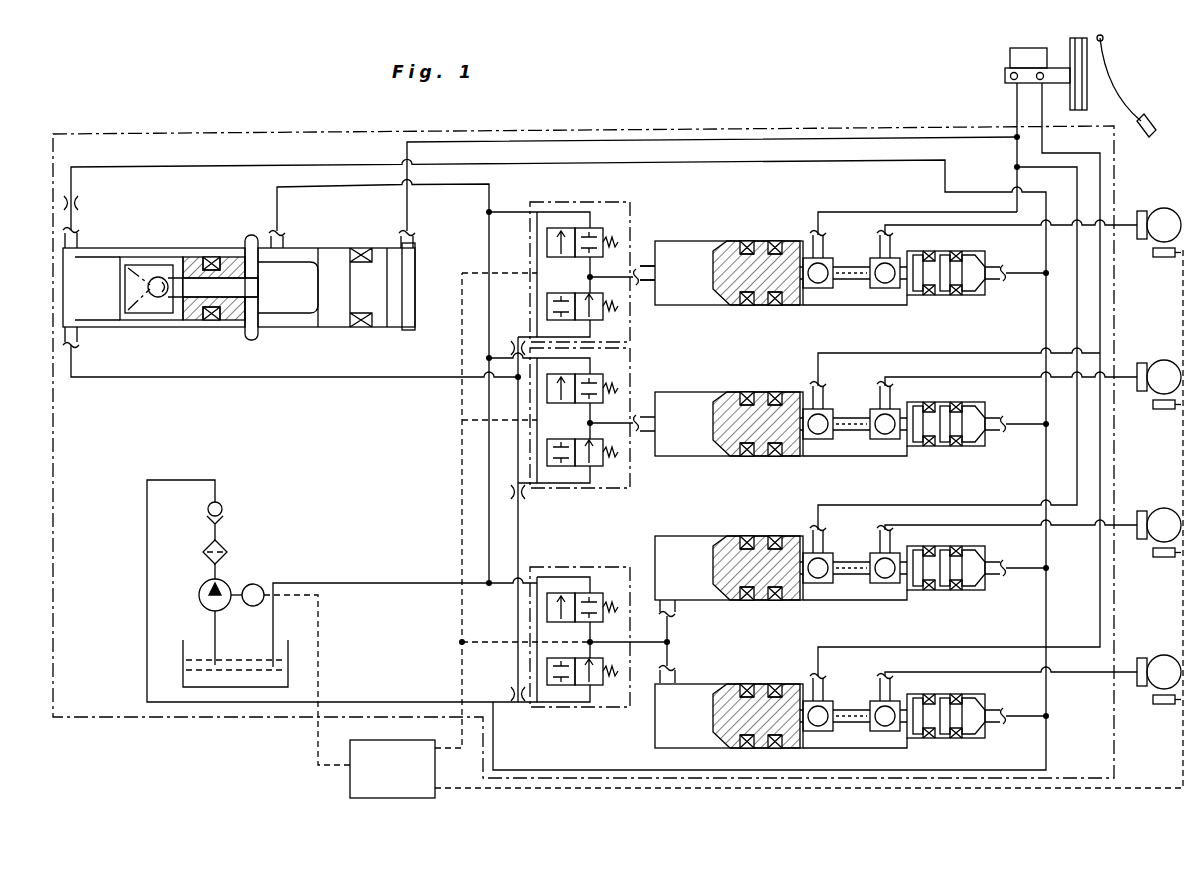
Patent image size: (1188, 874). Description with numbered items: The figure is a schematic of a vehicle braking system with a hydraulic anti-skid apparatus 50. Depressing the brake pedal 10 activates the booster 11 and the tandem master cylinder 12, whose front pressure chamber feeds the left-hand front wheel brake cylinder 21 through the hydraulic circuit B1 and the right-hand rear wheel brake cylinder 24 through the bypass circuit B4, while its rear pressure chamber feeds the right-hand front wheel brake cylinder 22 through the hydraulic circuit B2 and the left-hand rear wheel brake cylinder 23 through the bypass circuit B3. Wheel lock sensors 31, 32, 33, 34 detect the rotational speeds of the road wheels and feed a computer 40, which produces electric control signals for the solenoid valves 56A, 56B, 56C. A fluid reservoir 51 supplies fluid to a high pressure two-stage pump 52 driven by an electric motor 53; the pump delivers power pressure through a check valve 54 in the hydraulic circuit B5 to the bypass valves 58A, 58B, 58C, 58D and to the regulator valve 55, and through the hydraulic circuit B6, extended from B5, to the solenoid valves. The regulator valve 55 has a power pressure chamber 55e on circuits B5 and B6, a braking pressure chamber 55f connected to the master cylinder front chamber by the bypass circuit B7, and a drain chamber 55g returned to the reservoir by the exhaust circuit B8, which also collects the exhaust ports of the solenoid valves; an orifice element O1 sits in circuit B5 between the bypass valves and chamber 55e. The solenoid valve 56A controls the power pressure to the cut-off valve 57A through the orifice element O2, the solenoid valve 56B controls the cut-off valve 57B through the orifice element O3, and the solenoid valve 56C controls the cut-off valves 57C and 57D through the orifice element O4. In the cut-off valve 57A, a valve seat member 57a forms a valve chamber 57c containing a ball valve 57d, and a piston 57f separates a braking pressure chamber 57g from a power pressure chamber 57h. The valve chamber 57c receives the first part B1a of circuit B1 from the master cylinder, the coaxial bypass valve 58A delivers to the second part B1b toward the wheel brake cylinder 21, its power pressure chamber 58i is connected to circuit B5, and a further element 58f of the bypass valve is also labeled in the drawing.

The brake pedal 10 is at (1148, 116).
The booster 11 is at (1069, 43).
The tandem master cylinder 12 is at (1004, 78).
The left-hand front wheel brake cylinder 21 is at (1141, 213).
The right-hand front wheel brake cylinder 22 is at (1141, 364).
The left-hand rear wheel brake cylinder 23 is at (1141, 659).
The right-hand rear wheel brake cylinder 24 is at (1141, 512).
The wheel lock sensor 31 is at (1164, 259).
The wheel lock sensor 32 is at (1164, 411).
The wheel lock sensor 33 is at (1164, 706).
The wheel lock sensor 34 is at (1164, 559).
The computer 40 is at (406, 783).
The anti-skid apparatus 50 is at (692, 128).
The fluid reservoir 51 is at (183, 672).
The high pressure two-stage pump 52 is at (201, 589).
The electric motor 53 is at (256, 580).
The check valve 54 is at (221, 512).
The regulator valve 55 is at (260, 275).
The power pressure chamber 55e is at (108, 262).
The braking pressure chamber 55f is at (413, 264).
The drain chamber 55g is at (300, 322).
The solenoid valve 56A is at (631, 222).
The solenoid valve 56B is at (631, 387).
The solenoid valve 56C is at (578, 572).
The cut-off valve 57A is at (773, 264).
The cut-off valve 57B is at (810, 390).
The cut-off valve 57C is at (808, 535).
The cut-off valve 57D is at (808, 681).
The valve seat member 57a is at (808, 297).
The valve chamber 57c is at (832, 271).
The ball valve 57d is at (823, 262).
The piston 57f is at (736, 306).
The braking pressure chamber 57g is at (812, 300).
The power pressure chamber 57h is at (707, 250).
The bypass valve 58A is at (972, 282).
The bypass valve 58B is at (932, 460).
The bypass valve 58C is at (932, 606).
The bypass valve 58D is at (938, 750).
The seal 58f is at (930, 256).
The power pressure chamber 58i is at (914, 304).
The hydraulic circuit B1 is at (1014, 100).
The first part of hydraulic circuit B1 B1a is at (888, 212).
The second part of hydraulic circuit B1 B1b is at (982, 226).
The hydraulic circuit B2 is at (1049, 102).
The bypass circuit B3 is at (1100, 604).
The bypass circuit B4 is at (1077, 174).
The hydraulic circuit B5 is at (202, 168).
The hydraulic circuit B6 is at (355, 378).
The bypass circuit B7 is at (820, 137).
The exhaust circuit B8 is at (330, 187).
The orifice element O1 is at (78, 204).
The orifice element O2 is at (518, 340).
The orifice element O3 is at (521, 498).
The orifice element O4 is at (519, 704).